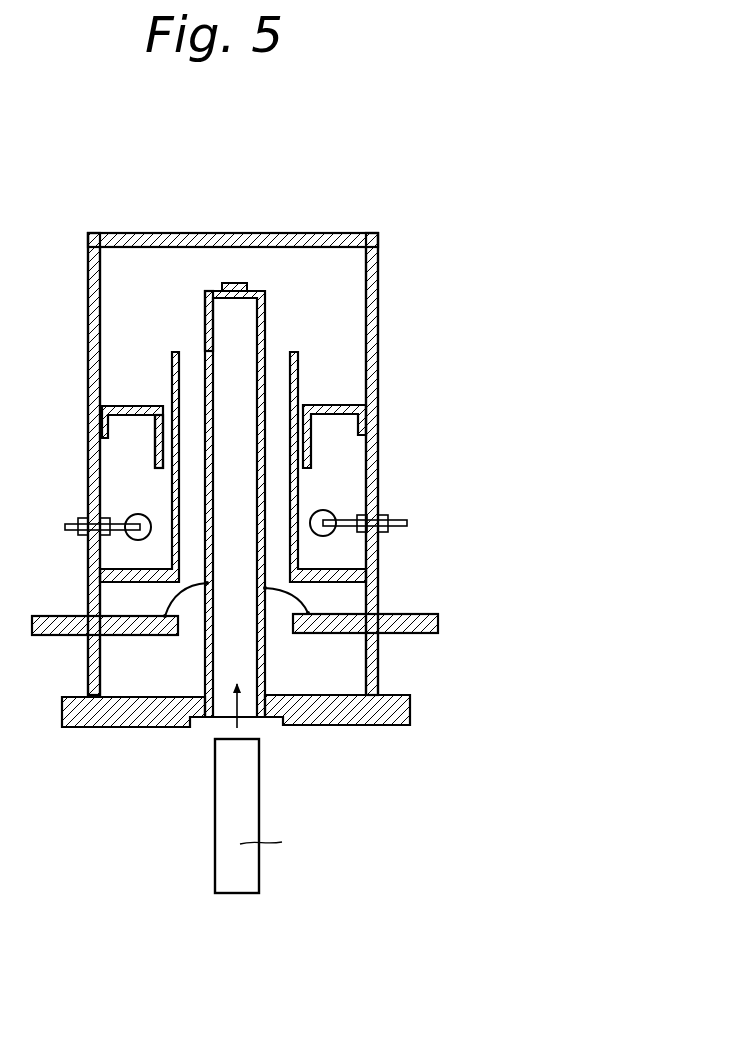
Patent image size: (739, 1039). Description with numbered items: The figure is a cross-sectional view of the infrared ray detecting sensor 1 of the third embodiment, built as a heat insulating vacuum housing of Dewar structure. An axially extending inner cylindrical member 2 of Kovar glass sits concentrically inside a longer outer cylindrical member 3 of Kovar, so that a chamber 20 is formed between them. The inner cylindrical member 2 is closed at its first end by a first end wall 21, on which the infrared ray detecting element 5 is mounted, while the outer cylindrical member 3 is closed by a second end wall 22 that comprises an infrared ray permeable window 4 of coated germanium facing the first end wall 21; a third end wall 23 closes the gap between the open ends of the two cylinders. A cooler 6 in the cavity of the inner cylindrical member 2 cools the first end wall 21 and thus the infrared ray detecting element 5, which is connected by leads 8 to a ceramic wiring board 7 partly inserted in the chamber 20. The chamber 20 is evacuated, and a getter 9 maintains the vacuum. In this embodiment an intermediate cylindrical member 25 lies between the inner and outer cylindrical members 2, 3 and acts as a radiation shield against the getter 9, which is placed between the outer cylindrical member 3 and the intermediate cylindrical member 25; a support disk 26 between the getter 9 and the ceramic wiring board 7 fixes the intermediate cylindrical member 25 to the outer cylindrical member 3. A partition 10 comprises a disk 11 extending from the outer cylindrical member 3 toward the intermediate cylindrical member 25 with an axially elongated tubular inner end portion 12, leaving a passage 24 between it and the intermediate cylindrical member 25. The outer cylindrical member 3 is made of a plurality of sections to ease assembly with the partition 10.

The infrared ray detecting sensor 1 is at (264, 433).
The inner cylindrical member 2 is at (314, 449).
The outer cylindrical member 3 is at (378, 334).
The infrared ray permeable window 4 is at (165, 238).
The infrared ray detecting element 5 is at (233, 284).
The cooler 6 is at (213, 783).
The ceramic wiring board 7 is at (46, 638).
The leads 8 is at (175, 597).
The getter 9 is at (137, 515).
The partition 10 is at (132, 381).
The disk 11 is at (120, 407).
The tubular inner end portion 12 is at (160, 452).
The chamber 20 is at (350, 366).
The first end wall 21 is at (206, 293).
The second end wall 22 is at (110, 238).
The third end wall 23 is at (107, 714).
The passage 24 is at (165, 430).
The intermediate cylindrical member 25 is at (297, 392).
The support disk 26 is at (150, 566).